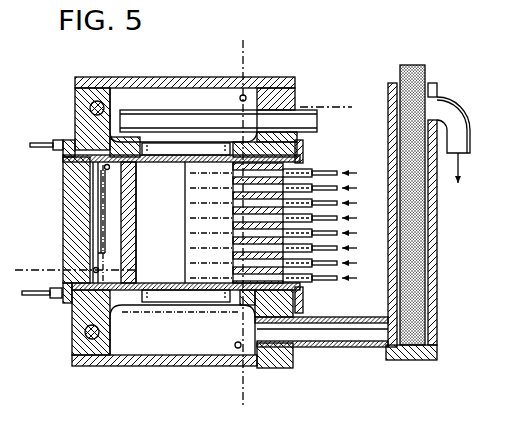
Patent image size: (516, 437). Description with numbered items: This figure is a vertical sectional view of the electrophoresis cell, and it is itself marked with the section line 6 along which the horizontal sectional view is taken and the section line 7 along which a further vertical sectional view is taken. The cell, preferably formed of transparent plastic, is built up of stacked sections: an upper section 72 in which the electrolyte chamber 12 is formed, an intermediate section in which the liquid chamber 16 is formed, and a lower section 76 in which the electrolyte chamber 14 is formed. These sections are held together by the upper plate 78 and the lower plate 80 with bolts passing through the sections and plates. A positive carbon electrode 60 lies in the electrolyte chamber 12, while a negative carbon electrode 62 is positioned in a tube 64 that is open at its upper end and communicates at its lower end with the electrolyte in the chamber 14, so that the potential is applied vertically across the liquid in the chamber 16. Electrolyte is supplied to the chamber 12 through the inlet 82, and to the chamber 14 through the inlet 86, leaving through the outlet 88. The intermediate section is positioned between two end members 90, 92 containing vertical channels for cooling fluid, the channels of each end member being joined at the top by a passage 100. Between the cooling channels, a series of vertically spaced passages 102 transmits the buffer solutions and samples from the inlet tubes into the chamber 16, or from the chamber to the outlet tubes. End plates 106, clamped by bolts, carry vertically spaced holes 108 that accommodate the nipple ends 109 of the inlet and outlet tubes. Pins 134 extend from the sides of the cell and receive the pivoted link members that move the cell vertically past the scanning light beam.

The section line 6- 6 is at (25, 250).
The section line 7- 7 is at (262, 57).
The electrolyte chamber 12 is at (142, 95).
The electrolyte chamber 14 is at (155, 340).
The intermediate chamber 16 is at (170, 249).
The carbon electrode 60 is at (130, 108).
The carbon electrode 62 is at (425, 72).
The tube 64 is at (437, 226).
The upper section 72 is at (295, 100).
The lower section 76 is at (295, 351).
The upper plate 78 is at (156, 78).
The lower plate 80 is at (164, 364).
The inlet 82 is at (42, 141).
The inlet 86 is at (37, 298).
The outlet 88 is at (470, 139).
The end member 90 is at (303, 296).
The end member 92 is at (78, 192).
The passage 100 is at (103, 167).
The vertically spaced passages 102 is at (236, 207).
The end plates 106 is at (303, 148).
The vertically spaced holes 108 is at (304, 164).
The nipple ends 109 is at (318, 244).
The pins 134 is at (85, 100).